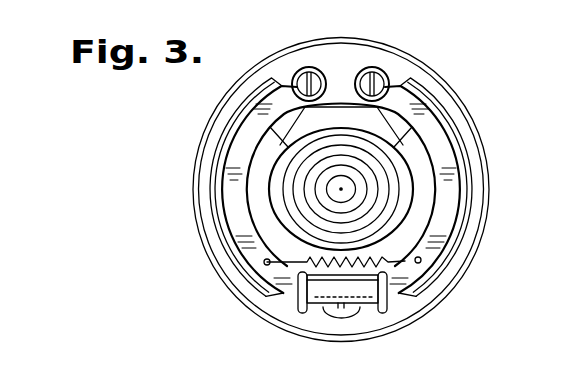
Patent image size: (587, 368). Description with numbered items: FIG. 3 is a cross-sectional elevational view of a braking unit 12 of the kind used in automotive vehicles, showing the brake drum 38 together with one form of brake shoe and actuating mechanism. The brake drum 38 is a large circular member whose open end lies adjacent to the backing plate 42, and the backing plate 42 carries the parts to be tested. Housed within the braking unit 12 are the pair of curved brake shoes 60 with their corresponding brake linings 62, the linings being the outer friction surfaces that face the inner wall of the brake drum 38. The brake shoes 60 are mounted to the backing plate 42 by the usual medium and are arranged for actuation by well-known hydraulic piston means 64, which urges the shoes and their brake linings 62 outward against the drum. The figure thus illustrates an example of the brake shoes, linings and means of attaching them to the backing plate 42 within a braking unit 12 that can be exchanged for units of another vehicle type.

The braking unit 12 is at (495, 188).
The brake drum 38 is at (467, 107).
The backing plate 42 is at (338, 62).
The brake shoes 60 is at (230, 212).
The brake linings 62 is at (218, 150).
The hydraulic piston means 64 is at (318, 297).